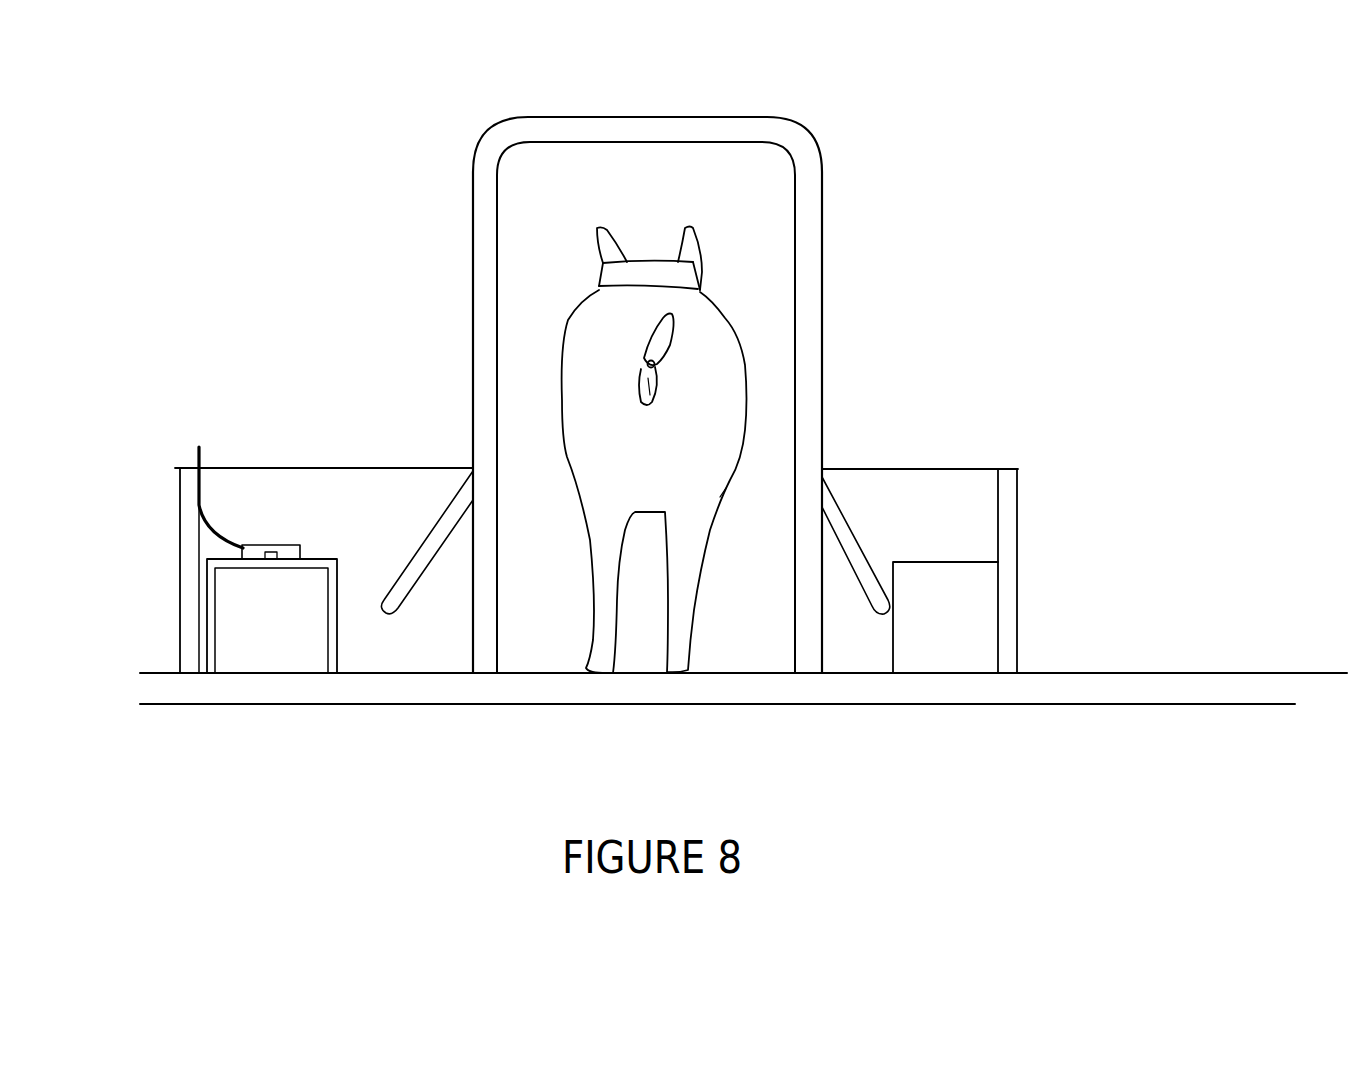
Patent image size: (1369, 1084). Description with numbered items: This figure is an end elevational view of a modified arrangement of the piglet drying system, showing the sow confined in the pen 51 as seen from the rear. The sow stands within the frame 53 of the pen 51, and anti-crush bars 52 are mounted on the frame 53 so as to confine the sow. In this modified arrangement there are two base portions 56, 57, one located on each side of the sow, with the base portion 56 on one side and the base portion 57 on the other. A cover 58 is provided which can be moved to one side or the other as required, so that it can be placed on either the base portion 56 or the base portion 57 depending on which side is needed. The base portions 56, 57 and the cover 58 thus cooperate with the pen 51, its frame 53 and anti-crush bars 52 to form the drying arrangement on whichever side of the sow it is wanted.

The pen 51 is at (808, 404).
The anti-crush bars 52 is at (853, 518).
The frame 53 is at (808, 265).
The base portion 56 is at (975, 603).
The base portion 57 is at (245, 627).
The cover 58 is at (271, 509).